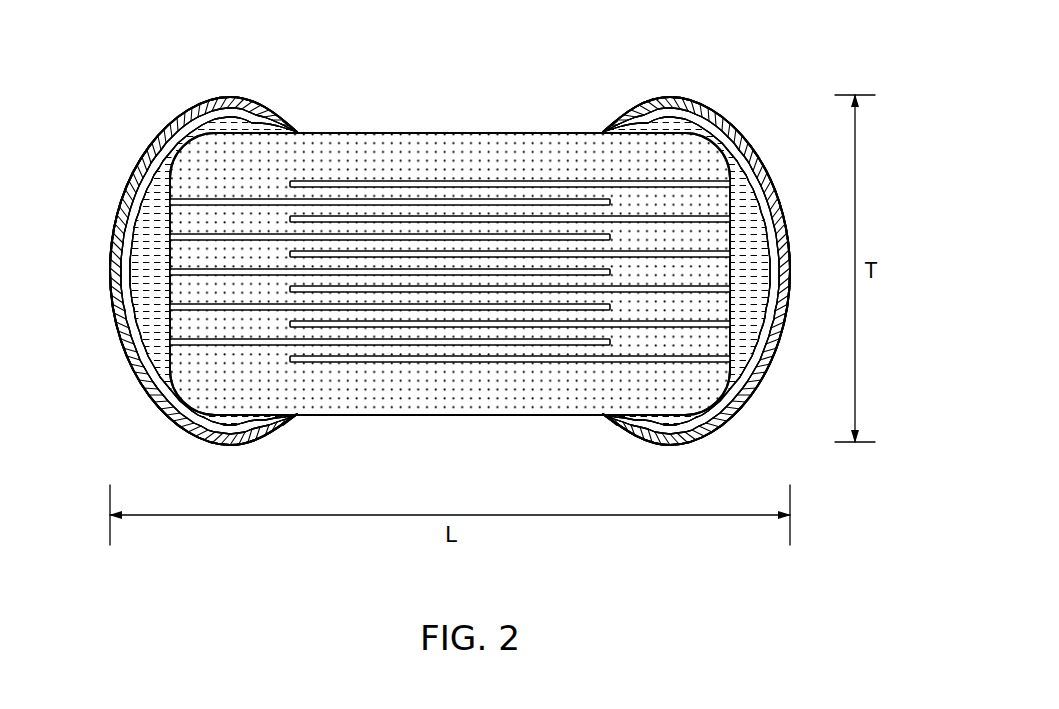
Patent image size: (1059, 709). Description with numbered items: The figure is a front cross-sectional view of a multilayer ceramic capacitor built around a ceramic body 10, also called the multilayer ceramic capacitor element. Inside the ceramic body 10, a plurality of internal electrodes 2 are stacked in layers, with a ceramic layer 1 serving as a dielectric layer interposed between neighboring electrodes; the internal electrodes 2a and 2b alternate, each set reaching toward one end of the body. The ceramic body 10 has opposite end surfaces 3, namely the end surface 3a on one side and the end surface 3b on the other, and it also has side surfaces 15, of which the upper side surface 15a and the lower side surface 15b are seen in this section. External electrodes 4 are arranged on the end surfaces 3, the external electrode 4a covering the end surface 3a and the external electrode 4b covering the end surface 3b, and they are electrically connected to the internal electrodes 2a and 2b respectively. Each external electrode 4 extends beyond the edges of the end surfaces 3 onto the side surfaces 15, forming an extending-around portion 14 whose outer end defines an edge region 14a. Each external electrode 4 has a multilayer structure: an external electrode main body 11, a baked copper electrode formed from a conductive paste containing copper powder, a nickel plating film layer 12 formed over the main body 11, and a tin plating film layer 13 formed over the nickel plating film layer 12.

The ceramic layer 1 is at (483, 235).
The internal electrodes 2 is at (450, 262).
The internal electrode 2a is at (222, 236).
The internal electrode 2b is at (553, 293).
The end surfaces 3 is at (446, 271).
The end surface 3a is at (170, 354).
The end surface 3b is at (730, 380).
The external electrodes 4 is at (437, 226).
The external electrode 4a is at (140, 104).
The external electrode 4b is at (747, 77).
The ceramic body 10 is at (433, 420).
The external electrode main body 11 is at (138, 318).
The Ni-plating film layer 12 is at (120, 282).
The Sn-plating film layer 13 is at (130, 194).
The extending-around portion 14 is at (222, 98).
The edge region 14a is at (299, 127).
The side surfaces 15 is at (450, 274).
The side surface 15a is at (535, 133).
The side surface 15b is at (376, 416).